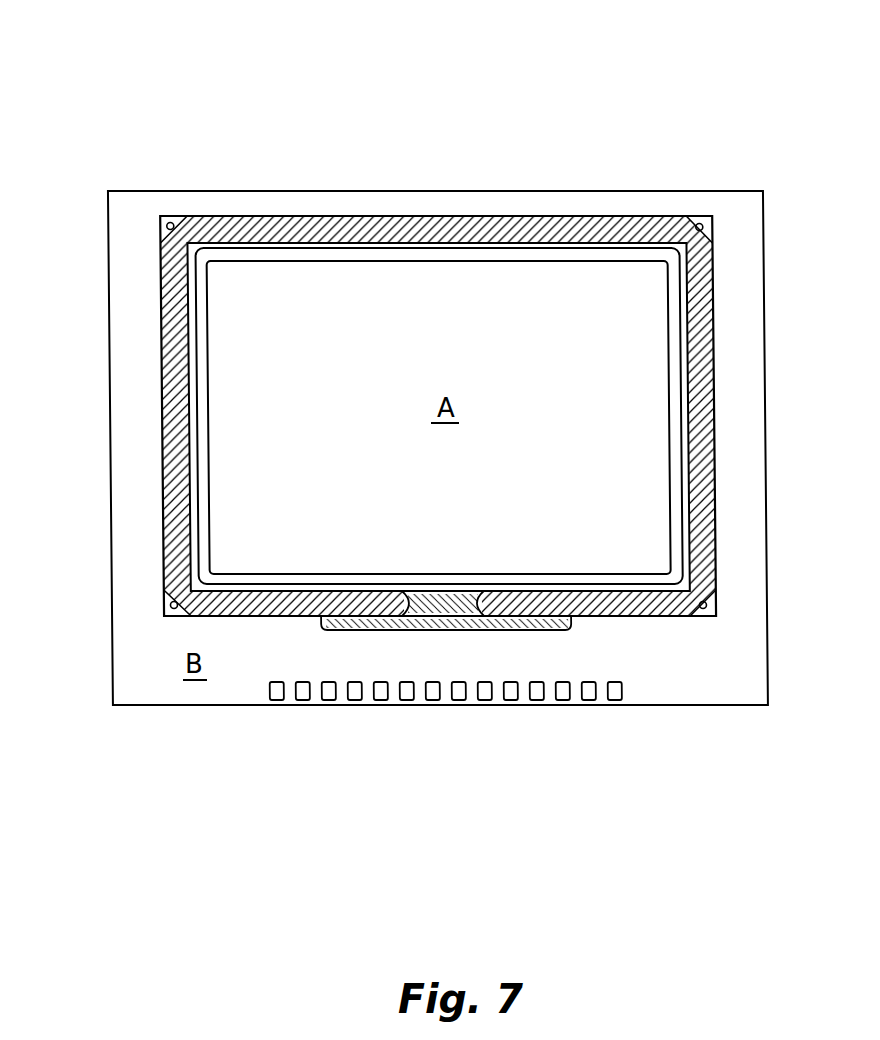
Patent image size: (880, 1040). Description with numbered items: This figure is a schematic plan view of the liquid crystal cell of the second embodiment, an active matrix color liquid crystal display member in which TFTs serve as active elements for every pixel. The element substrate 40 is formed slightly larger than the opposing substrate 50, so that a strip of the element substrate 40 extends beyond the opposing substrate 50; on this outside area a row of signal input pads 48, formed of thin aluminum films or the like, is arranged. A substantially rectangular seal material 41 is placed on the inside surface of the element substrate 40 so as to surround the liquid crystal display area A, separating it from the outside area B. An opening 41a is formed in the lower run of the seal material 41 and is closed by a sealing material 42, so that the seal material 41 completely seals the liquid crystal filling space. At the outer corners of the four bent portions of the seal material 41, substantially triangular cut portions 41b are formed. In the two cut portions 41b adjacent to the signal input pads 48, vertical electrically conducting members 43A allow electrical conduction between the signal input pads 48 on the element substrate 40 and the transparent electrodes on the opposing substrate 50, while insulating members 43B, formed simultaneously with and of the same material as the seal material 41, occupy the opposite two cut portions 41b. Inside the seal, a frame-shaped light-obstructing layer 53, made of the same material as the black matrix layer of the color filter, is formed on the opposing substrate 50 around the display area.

The element substrate 40 is at (207, 710).
The seal material 41 is at (521, 225).
The opening 41a is at (445, 607).
The cut portions 41b is at (716, 240).
The sealing material 42 is at (563, 630).
The vertical electrically conducting members 43A is at (165, 603).
The insulating members 43B is at (170, 221).
The signal input pads 48 is at (348, 702).
The opposing substrate 50 is at (327, 216).
The light-obstructing layer 53 is at (667, 422).